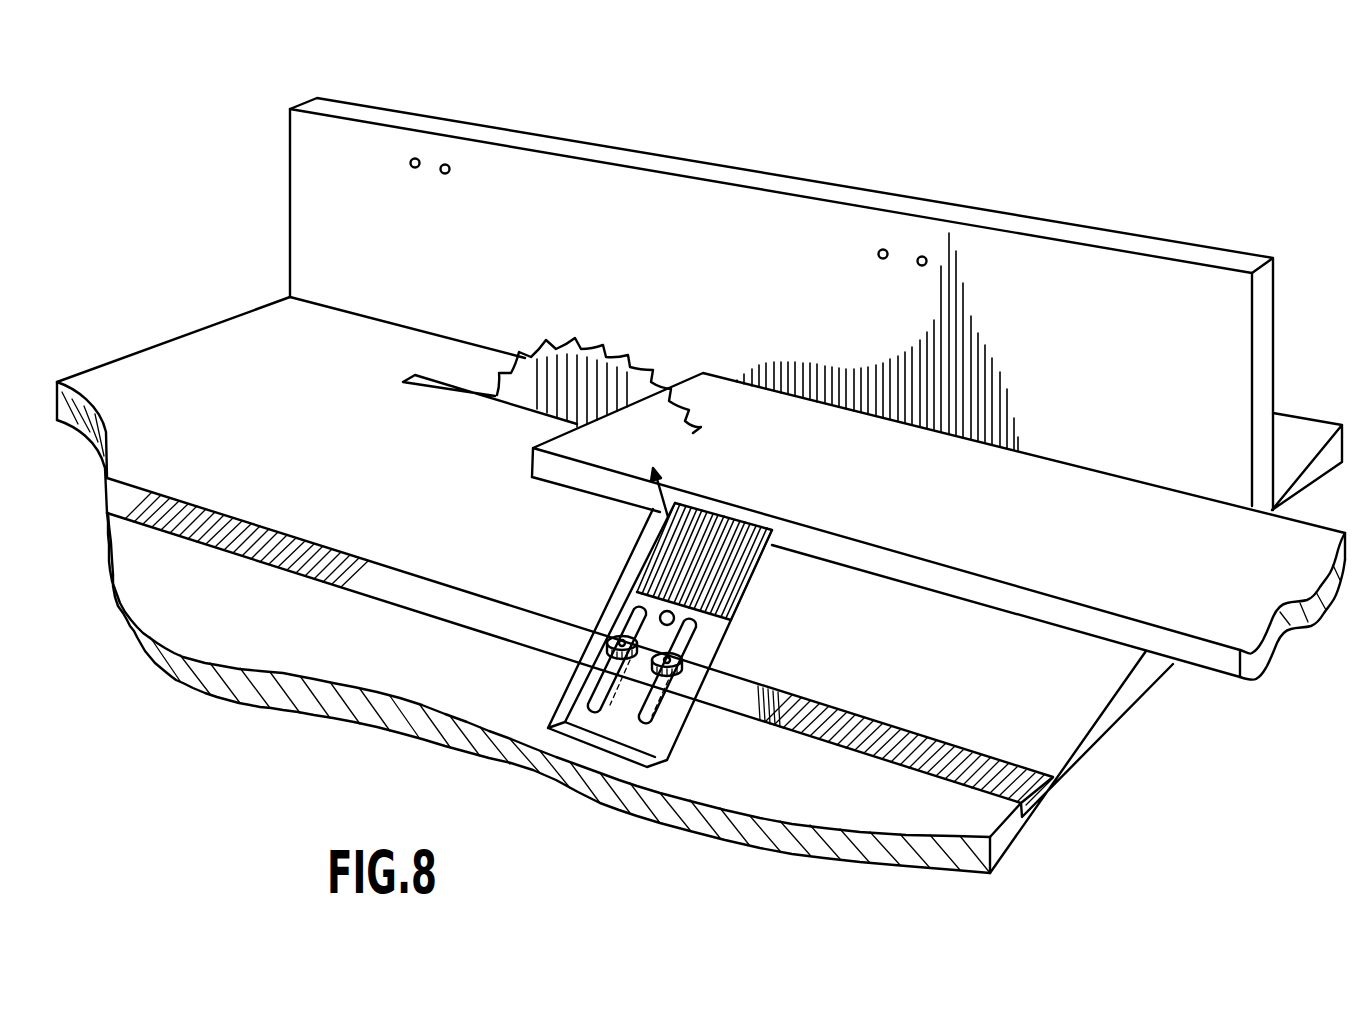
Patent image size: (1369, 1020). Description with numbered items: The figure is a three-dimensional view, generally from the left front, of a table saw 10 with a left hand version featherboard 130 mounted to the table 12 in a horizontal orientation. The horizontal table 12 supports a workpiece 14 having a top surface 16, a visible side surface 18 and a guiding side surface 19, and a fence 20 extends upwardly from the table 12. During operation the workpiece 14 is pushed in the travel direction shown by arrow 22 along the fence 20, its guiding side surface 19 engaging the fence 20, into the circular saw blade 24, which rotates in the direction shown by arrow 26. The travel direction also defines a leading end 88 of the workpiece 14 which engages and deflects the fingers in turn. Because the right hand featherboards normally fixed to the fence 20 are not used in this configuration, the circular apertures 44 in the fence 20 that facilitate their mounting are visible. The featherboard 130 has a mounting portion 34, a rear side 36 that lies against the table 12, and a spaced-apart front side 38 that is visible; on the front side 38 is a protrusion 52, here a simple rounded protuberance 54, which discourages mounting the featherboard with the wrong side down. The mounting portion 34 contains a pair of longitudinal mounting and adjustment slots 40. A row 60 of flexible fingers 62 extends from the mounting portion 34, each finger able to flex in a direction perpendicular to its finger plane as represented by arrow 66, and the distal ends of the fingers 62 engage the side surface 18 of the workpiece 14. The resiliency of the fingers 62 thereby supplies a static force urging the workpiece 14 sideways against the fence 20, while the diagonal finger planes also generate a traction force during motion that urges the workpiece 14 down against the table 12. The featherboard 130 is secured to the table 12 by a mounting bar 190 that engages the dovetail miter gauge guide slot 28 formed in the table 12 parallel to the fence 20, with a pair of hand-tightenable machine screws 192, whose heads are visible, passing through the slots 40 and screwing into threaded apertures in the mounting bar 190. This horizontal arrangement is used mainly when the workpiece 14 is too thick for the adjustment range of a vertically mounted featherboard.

The table saw 10 is at (1042, 133).
The table 12 is at (338, 492).
The workpiece 14 is at (1090, 502).
The top surface 16 is at (1168, 525).
The visible side surface 18 is at (1040, 608).
The guiding side surface 19 is at (1307, 517).
The fence 20 is at (728, 212).
The workpiece travel direction arrow 22 is at (822, 478).
The circular saw blade 24 is at (490, 400).
The blade rotation arrow 26 is at (633, 345).
The miter gauge guide slot 28 is at (945, 760).
The mounting portion 34 is at (633, 687).
The rear side 36 is at (598, 745).
The front side 38 is at (605, 724).
The longitudinal mounting and adjustment slots 40 is at (602, 687).
The circular apertures 44 is at (441, 170).
The protrusion 52 is at (630, 623).
The rounded protuberance 54 is at (664, 612).
The row of flexible fingers 60 is at (772, 593).
The flexible fingers 62 is at (648, 553).
The flex direction arrow 66 is at (663, 507).
The leading end 88 is at (548, 448).
The left hand featherboard 130 is at (690, 780).
The mounting bar 190 is at (741, 692).
The hand-tightenable machine screws 192 is at (624, 645).